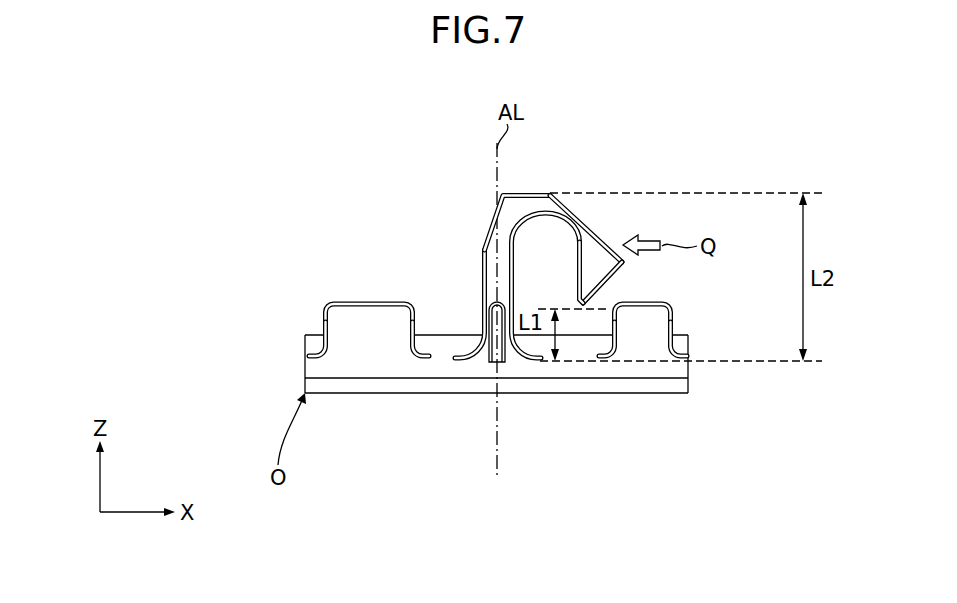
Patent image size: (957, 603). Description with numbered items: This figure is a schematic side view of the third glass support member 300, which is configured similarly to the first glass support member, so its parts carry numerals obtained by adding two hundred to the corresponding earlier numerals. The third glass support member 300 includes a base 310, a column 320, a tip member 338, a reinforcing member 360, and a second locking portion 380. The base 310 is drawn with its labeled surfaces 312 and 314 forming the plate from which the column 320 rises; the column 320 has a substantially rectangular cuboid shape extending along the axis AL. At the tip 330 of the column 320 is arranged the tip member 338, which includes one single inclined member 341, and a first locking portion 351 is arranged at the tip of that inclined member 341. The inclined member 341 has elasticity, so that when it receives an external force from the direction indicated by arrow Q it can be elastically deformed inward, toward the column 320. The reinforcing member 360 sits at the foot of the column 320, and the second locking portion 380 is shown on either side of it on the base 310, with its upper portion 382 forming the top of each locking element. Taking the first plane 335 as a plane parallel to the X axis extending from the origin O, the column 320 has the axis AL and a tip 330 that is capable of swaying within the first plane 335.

The third glass support member 300 is at (703, 100).
The base 310 is at (537, 411).
The front surface of base plate 312 is at (535, 400).
The top surface of base plate 314 is at (444, 371).
The column 320 is at (541, 317).
The tip 330 is at (492, 217).
The first plane 335 is at (344, 174).
The tip member 338 is at (588, 209).
The inclined member 341 is at (603, 236).
The first locking portion 351 is at (583, 305).
The reinforcing member 360 is at (486, 332).
The second locking portion 380 is at (498, 297).
The top portion of holding member 382 is at (353, 302).